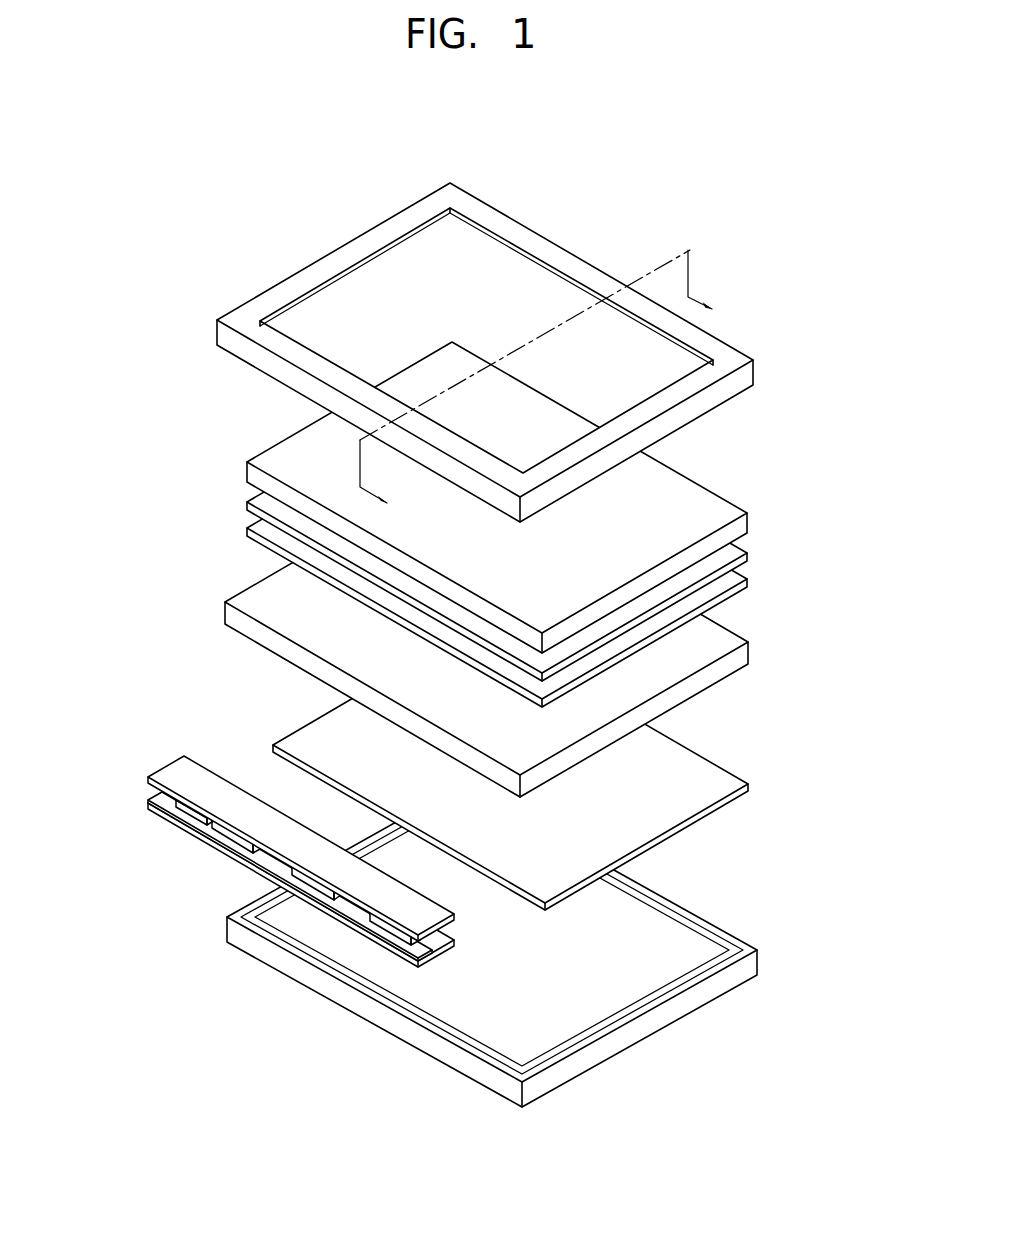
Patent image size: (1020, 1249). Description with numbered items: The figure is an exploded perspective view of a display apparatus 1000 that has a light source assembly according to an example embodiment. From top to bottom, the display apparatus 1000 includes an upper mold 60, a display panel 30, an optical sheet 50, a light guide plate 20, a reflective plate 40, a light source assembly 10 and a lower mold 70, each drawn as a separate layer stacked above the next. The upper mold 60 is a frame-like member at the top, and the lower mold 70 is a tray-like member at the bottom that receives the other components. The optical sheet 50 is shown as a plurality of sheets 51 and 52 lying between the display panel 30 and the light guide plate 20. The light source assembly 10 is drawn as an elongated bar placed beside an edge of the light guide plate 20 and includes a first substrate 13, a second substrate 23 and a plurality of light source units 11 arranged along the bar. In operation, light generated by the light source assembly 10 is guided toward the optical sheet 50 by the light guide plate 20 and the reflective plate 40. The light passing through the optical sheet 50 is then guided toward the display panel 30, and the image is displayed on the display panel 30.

The display apparatus 1000 is at (382, 192).
The upper mold 60 is at (745, 373).
The display panel 30 is at (743, 525).
The optical sheet 50 is at (548, 544).
The sheet 51 is at (745, 558).
The sheet 52 is at (745, 582).
The light guide plate 20 is at (743, 653).
The reflective plate 40 is at (745, 787).
The light source assembly 10 is at (258, 861).
The first substrate 13 is at (147, 777).
The second substrate 23 is at (147, 801).
The light source units 11 is at (98, 767).
The lower mold 70 is at (750, 963).